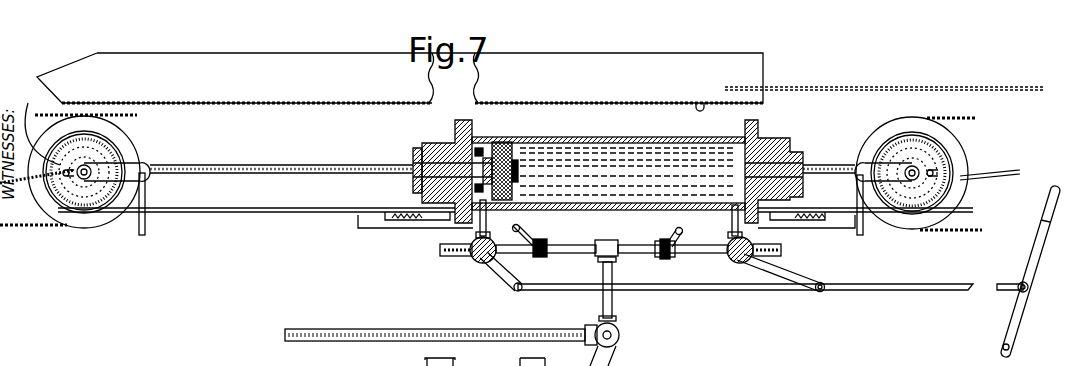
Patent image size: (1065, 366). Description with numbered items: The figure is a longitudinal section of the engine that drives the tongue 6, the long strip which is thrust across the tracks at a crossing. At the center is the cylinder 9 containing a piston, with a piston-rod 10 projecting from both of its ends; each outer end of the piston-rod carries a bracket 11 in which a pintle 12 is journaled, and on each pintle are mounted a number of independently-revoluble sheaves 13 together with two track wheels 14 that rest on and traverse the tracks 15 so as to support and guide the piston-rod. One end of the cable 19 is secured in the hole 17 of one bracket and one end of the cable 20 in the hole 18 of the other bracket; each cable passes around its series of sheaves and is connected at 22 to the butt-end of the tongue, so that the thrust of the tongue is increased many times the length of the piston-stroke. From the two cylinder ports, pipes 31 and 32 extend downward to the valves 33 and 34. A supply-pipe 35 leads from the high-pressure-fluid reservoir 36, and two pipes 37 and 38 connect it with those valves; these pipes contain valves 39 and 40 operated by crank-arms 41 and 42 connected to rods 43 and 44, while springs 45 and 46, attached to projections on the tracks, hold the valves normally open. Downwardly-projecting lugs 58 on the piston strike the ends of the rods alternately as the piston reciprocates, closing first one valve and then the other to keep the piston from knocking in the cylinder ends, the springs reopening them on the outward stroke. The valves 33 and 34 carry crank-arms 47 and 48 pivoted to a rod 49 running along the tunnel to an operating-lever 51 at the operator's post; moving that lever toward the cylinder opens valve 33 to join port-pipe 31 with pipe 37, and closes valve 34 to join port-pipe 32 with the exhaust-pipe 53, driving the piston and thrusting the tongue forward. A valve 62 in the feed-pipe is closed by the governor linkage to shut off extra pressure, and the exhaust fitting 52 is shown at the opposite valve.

The tongue 6 is at (400, 82).
The cylinder 9 is at (610, 140).
The piston-rod 10 is at (295, 168).
The bracket 11 is at (125, 162).
The pintle 12 is at (80, 195).
The sheaves 13 is at (112, 118).
The track wheels 14 is at (105, 150).
The tracks 15 is at (262, 212).
The hole 17 is at (37, 135).
The hole 18 is at (955, 180).
The cable 19 is at (226, 106).
The cable 20 is at (1020, 172).
The cable connection 22 is at (879, 81).
The port-pipe 31 is at (487, 222).
The port-pipe 32 is at (730, 222).
The valve 33 is at (470, 262).
The valve 34 is at (730, 262).
The supply-pipe 35 is at (380, 344).
The high-pressure-fluid reservoir 36 is at (607, 291).
The pipe 37 is at (568, 245).
The pipe 38 is at (632, 247).
The valve 39 is at (545, 258).
The valve 40 is at (665, 259).
The crank-arm 41 is at (520, 226).
The crank-arm 42 is at (680, 228).
The rod 43 is at (370, 232).
The rod 44 is at (840, 230).
The spring 45 is at (408, 220).
The spring 46 is at (808, 222).
The crank-arm 47 is at (500, 282).
The crank-arm 48 is at (790, 270).
The rod 49 is at (702, 290).
The operating-lever 51 is at (1040, 252).
The left exhaust pipe 52 is at (442, 258).
The exhaust-pipe 53 is at (781, 252).
The lugs 58 is at (145, 235).
The valve 62 is at (619, 332).